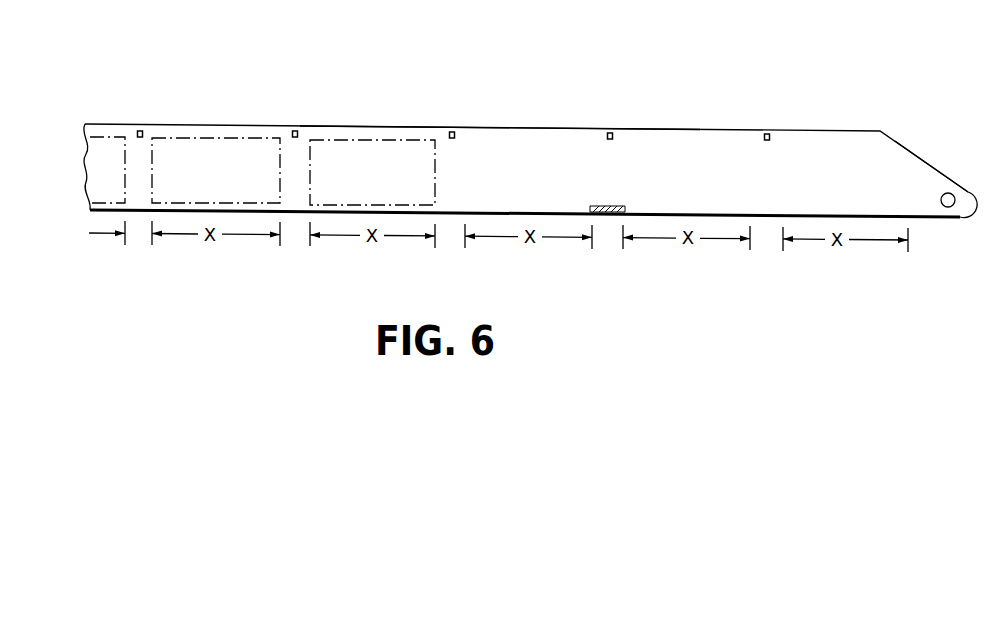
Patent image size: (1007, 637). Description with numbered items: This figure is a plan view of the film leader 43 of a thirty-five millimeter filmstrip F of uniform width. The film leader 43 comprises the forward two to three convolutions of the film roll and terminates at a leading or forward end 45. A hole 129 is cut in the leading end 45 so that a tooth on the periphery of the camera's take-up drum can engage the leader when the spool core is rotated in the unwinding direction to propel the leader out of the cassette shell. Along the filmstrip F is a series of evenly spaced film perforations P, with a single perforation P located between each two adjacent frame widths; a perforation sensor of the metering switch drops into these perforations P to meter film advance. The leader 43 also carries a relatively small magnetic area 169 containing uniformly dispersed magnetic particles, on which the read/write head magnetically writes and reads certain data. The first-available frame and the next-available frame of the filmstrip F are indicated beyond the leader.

The filmstrip F is at (257, 124).
The film leader 43 is at (503, 133).
The film perforations P is at (452, 132).
The leading end 45 is at (914, 165).
The magnetic area 169 is at (590, 206).
The hole 129 is at (950, 207).